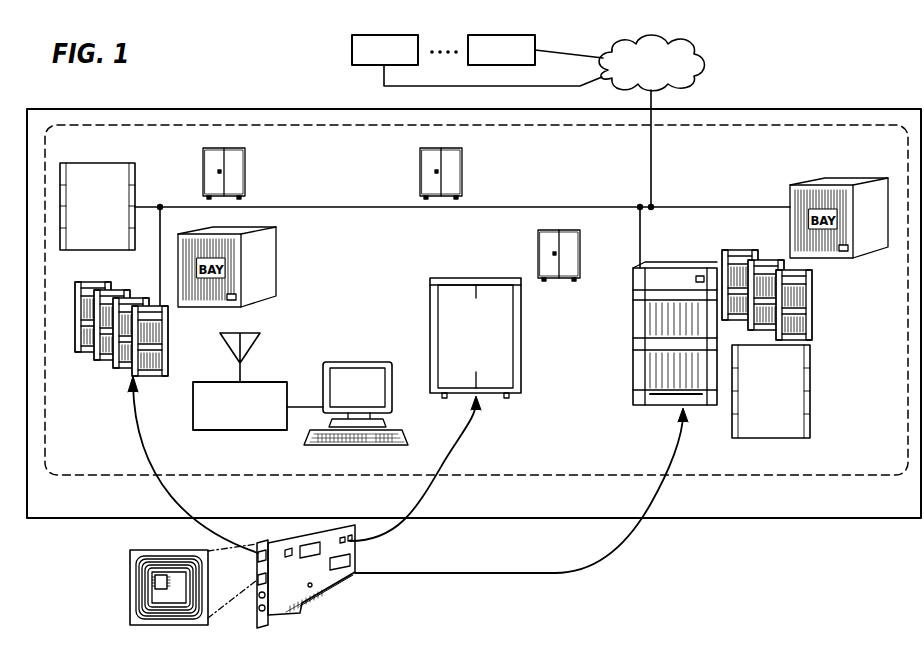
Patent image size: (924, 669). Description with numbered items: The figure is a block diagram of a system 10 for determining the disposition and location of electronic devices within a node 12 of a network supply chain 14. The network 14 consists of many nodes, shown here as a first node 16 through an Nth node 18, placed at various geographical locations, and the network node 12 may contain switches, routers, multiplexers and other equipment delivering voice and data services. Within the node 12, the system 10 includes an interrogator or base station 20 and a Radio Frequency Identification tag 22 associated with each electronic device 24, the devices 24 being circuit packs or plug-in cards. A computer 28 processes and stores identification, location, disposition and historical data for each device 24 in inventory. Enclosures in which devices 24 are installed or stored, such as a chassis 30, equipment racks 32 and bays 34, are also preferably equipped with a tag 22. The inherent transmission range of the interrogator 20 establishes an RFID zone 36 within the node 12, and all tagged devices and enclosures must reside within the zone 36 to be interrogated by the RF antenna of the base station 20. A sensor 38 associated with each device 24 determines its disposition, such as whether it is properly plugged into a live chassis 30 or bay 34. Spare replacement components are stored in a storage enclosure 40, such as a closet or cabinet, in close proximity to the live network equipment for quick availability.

The system 10 is at (197, 102).
The node 12 is at (730, 518).
The network supply chain 14 is at (703, 70).
The Node 1 16 is at (352, 44).
The Node N 18 is at (536, 38).
The interrogator 20 is at (268, 382).
The Radio Frequency Identification tag 22 is at (130, 592).
The electronic device 24 is at (325, 586).
The computer 28 is at (360, 362).
The chassis 30 is at (96, 163).
The equipment racks 32 is at (92, 362).
The bay 34 is at (278, 259).
The RFID zone 36 is at (841, 480).
The sensor 38 is at (153, 578).
The storage enclosure 40 is at (246, 168).